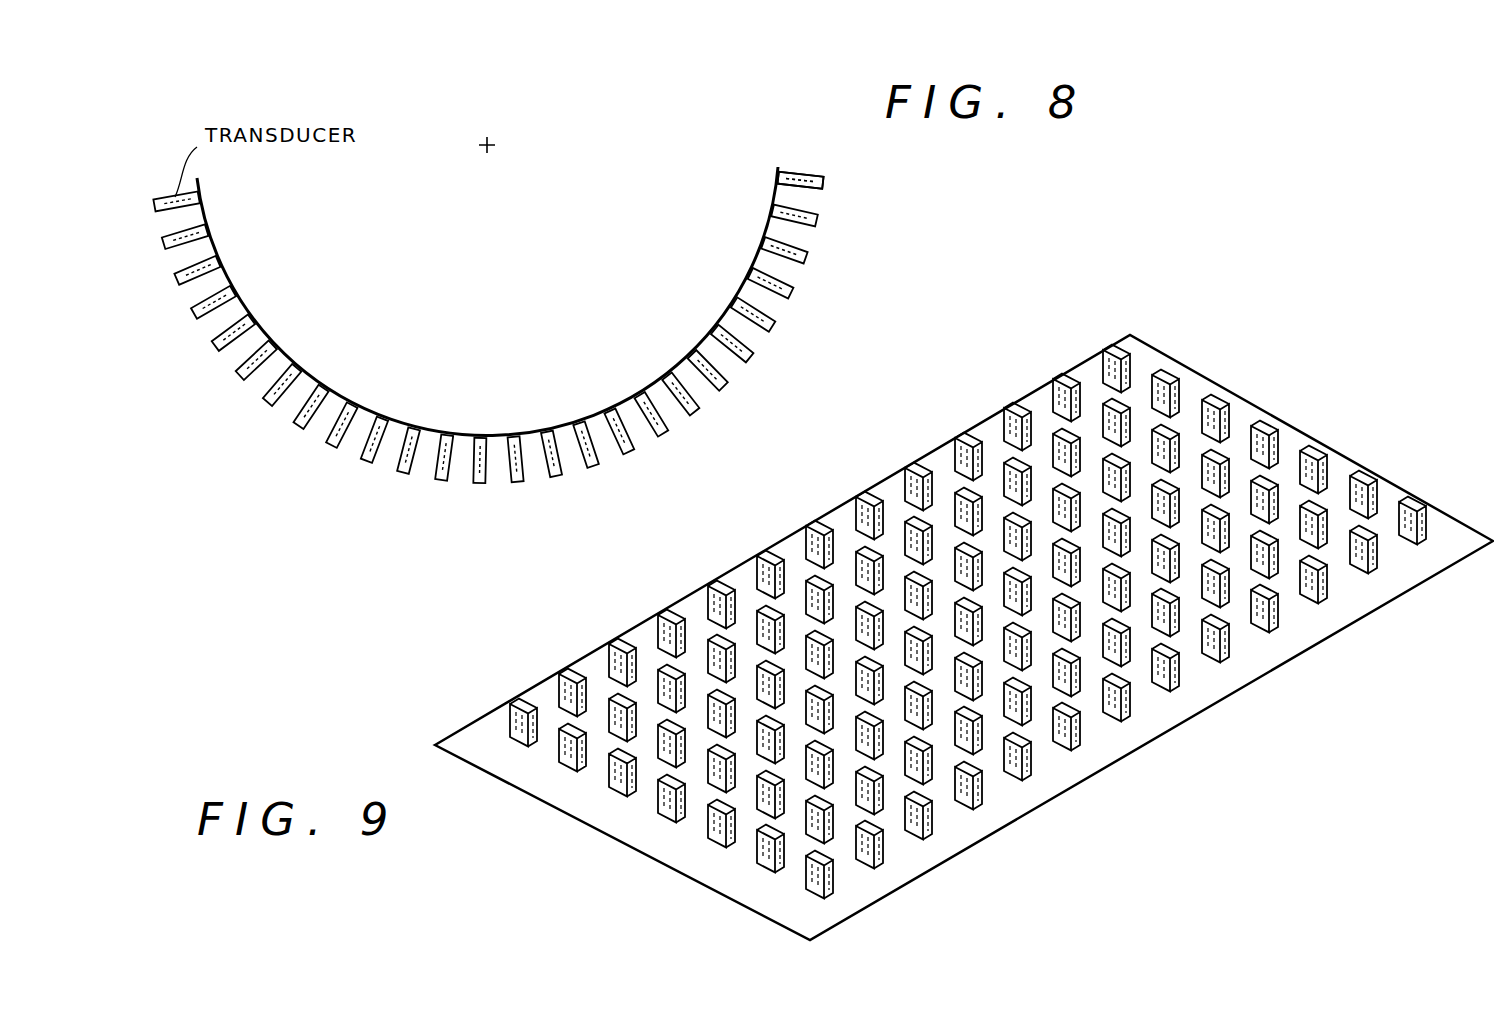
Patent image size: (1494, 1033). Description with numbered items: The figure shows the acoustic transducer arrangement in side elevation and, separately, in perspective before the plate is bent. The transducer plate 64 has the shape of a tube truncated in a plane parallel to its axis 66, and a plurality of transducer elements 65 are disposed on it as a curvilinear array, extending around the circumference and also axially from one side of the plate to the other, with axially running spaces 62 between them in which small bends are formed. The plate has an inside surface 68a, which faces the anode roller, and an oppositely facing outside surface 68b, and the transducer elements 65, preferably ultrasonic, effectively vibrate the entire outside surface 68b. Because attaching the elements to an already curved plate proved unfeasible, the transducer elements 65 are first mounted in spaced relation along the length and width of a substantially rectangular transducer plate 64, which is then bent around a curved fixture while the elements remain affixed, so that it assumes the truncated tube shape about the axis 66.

In FIG. 8, the axially running spaces 62 is at (248, 318).
In FIG. 8, the transducer plate 64 is at (205, 211).
In FIG. 9, the transducer plate 64 is at (1180, 727).
In FIG. 8, the transducer elements 65 is at (297, 424).
In FIG. 9, the transducer elements 65 is at (660, 803).
In FIG. 8, the axis 66 is at (493, 143).
In FIG. 8, the inside surface 68a is at (780, 183).
In FIG. 8, the outside surface 68b is at (790, 196).